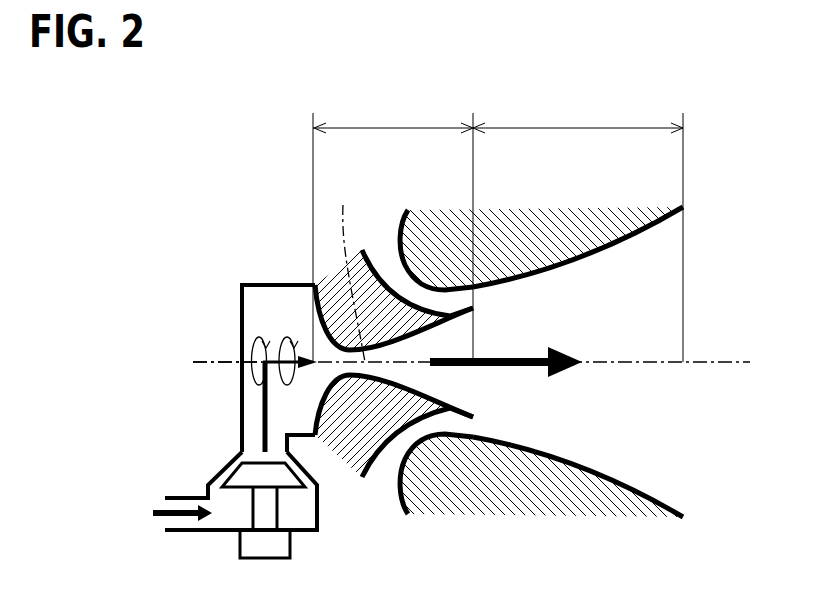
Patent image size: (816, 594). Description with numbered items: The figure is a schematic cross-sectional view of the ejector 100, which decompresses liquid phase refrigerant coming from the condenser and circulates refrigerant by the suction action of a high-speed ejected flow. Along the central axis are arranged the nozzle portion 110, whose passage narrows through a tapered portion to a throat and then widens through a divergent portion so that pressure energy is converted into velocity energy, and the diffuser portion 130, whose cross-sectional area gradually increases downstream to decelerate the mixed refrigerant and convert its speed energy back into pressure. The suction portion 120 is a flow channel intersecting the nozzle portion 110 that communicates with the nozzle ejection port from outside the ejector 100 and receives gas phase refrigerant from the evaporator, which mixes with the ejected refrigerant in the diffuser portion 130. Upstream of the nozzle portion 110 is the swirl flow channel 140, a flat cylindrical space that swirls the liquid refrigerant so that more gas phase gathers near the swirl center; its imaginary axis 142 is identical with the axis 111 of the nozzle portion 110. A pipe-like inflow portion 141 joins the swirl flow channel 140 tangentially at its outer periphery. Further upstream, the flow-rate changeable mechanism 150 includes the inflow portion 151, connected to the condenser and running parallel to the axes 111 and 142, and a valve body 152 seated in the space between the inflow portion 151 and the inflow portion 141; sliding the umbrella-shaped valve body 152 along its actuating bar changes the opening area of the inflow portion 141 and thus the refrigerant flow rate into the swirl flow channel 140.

The ejector 100 is at (247, 158).
The nozzle portion 110 is at (390, 127).
The axis 111 is at (346, 268).
The suction portion 120 is at (388, 457).
The diffuser portion 130 is at (576, 127).
The swirl flow channel 140 is at (260, 296).
The inflow portion 141 is at (255, 448).
The axis 142 is at (252, 373).
The flow-rate changeable mechanism 150 is at (230, 466).
The inflow portion 151 is at (175, 531).
The valve body 152 is at (242, 480).